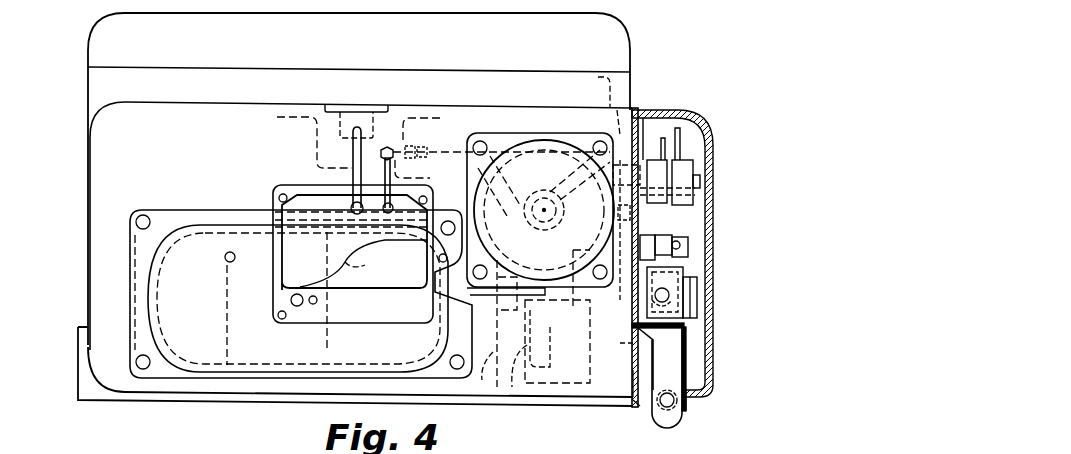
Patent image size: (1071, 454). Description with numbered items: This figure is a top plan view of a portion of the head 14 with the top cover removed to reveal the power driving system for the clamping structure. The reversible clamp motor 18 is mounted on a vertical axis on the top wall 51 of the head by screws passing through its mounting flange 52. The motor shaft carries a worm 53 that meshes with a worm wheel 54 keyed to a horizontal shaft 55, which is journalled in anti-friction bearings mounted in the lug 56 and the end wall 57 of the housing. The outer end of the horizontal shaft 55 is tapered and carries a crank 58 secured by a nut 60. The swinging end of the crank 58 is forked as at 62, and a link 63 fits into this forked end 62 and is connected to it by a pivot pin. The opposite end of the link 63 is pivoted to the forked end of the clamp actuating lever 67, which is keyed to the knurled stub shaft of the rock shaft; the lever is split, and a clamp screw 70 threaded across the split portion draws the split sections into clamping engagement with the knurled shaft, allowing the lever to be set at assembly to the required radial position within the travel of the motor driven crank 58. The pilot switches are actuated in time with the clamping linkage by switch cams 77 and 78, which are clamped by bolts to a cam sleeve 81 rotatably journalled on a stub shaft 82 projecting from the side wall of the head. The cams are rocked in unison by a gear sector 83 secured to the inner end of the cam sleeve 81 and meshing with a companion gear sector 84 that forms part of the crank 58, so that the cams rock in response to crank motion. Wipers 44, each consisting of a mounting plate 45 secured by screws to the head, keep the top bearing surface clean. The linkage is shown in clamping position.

The housing 14 is at (100, 172).
The reversible clamp motor 18 is at (532, 140).
The wipers 44 is at (640, 406).
The mounting plate 45 is at (637, 378).
The top wall 51 is at (453, 124).
The mounting flange 52 is at (590, 143).
The worm 53 is at (552, 200).
The worm wheel 54 is at (511, 369).
The horizontal shaft 55 is at (578, 336).
The lug 56 is at (491, 366).
The end wall 57 is at (653, 348).
The crank 58 is at (680, 272).
The nut 60 is at (692, 300).
The forked end 62 is at (686, 250).
The link 63 is at (670, 236).
The clamp actuating lever 67 is at (678, 363).
The clamp screw 70 is at (677, 411).
The switch cam 77 is at (665, 140).
The switch cam 78 is at (695, 127).
The cam sleeve 81 is at (690, 162).
The stub shaft 82 is at (700, 180).
The gear sector 83 is at (648, 160).
The gear sector 84 is at (642, 243).